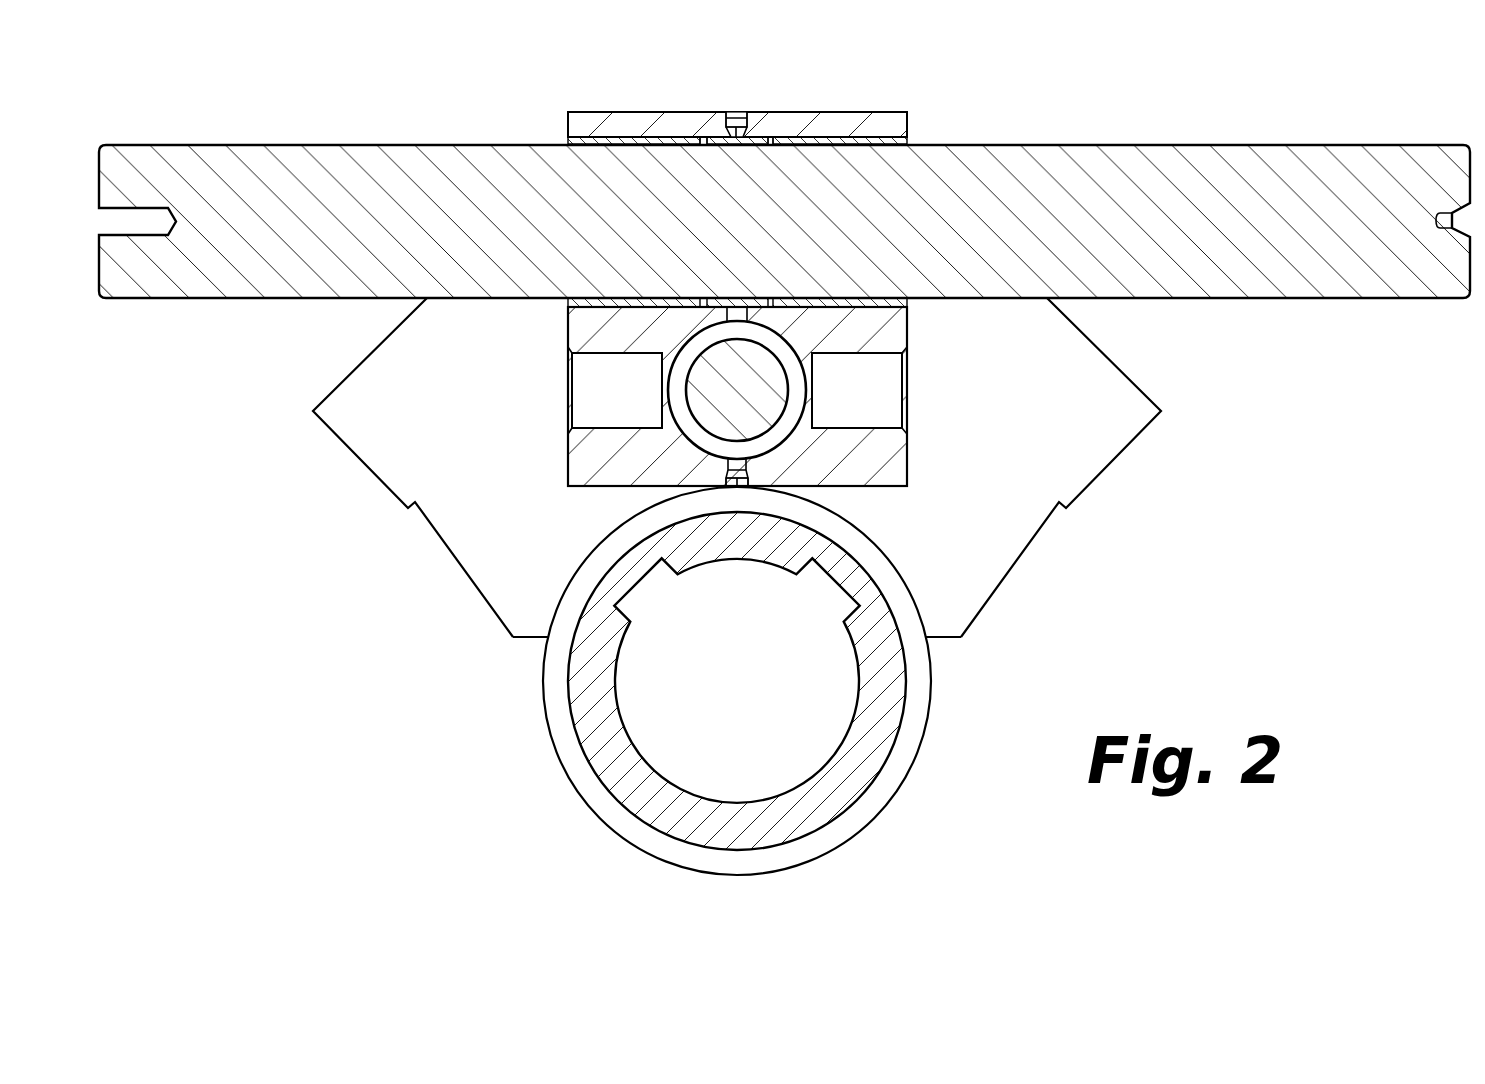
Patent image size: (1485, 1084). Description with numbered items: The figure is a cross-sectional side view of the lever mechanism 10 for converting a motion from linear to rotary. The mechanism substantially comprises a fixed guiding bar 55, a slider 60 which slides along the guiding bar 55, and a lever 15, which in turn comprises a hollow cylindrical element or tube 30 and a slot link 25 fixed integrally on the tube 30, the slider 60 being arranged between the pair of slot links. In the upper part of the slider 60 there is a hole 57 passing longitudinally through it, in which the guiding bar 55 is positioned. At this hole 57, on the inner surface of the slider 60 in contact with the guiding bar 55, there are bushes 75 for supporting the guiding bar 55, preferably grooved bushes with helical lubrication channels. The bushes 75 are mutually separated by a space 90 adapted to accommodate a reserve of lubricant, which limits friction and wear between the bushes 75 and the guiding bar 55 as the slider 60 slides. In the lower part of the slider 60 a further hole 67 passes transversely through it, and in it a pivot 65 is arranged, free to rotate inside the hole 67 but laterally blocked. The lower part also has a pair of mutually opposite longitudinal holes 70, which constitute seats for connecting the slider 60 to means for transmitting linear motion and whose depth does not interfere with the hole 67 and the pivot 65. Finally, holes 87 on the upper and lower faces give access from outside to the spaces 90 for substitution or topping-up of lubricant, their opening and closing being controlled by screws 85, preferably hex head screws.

The lever mechanism 10 is at (318, 650).
The lever 15 is at (505, 639).
The slot link 25 is at (1032, 465).
The tube 30 is at (610, 738).
The guiding bar 55 is at (1220, 212).
The hole 57 is at (560, 140).
The slider 60 is at (615, 328).
The pivot 65 is at (768, 370).
The hole 67 is at (801, 391).
The longitudinal holes 70 is at (610, 388).
The bushes 75 is at (628, 140).
The screws 85 is at (733, 112).
The holes 87 is at (747, 110).
The space 90 is at (735, 148).